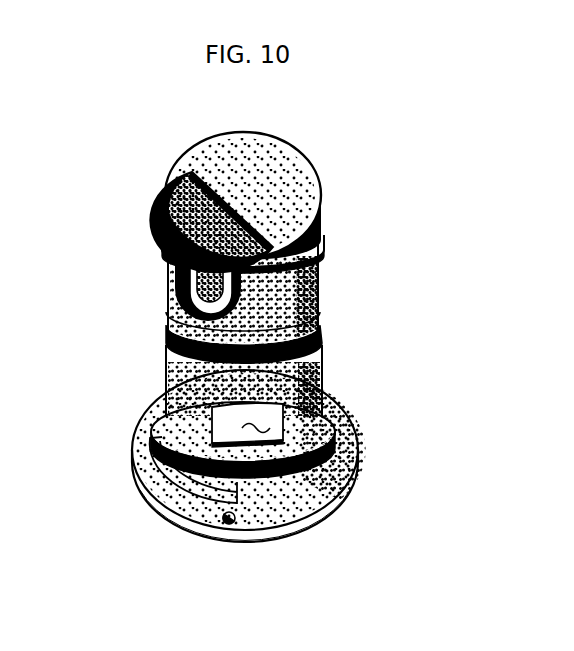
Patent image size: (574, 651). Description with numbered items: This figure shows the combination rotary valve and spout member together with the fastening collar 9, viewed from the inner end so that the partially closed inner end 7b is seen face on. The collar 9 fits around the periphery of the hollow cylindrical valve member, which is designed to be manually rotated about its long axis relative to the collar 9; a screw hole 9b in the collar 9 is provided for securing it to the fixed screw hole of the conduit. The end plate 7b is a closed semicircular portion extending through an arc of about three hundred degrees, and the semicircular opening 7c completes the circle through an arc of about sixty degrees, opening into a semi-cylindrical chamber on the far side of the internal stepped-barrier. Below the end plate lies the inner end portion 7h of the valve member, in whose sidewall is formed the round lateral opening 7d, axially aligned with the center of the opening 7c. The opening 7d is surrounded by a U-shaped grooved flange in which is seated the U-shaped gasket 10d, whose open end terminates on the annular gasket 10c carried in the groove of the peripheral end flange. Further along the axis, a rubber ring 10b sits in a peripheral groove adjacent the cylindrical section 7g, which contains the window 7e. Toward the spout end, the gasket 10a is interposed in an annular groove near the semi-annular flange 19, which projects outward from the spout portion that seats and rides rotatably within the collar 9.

The partially closed inner end 7b is at (290, 152).
The semicircular opening 7c is at (190, 188).
The round lateral opening 7d is at (195, 285).
The window 7e is at (247, 425).
The cylindrical section 7g is at (176, 356).
The inner end portion 7h is at (320, 268).
The fastening collar 9 is at (340, 419).
The screw hole 9b is at (229, 526).
The gasket 10a is at (162, 420).
The rubber ring 10b is at (320, 320).
The gasket 10c is at (318, 224).
The U-shaped gasket 10d is at (178, 265).
The semi-annular flange 19 is at (176, 466).